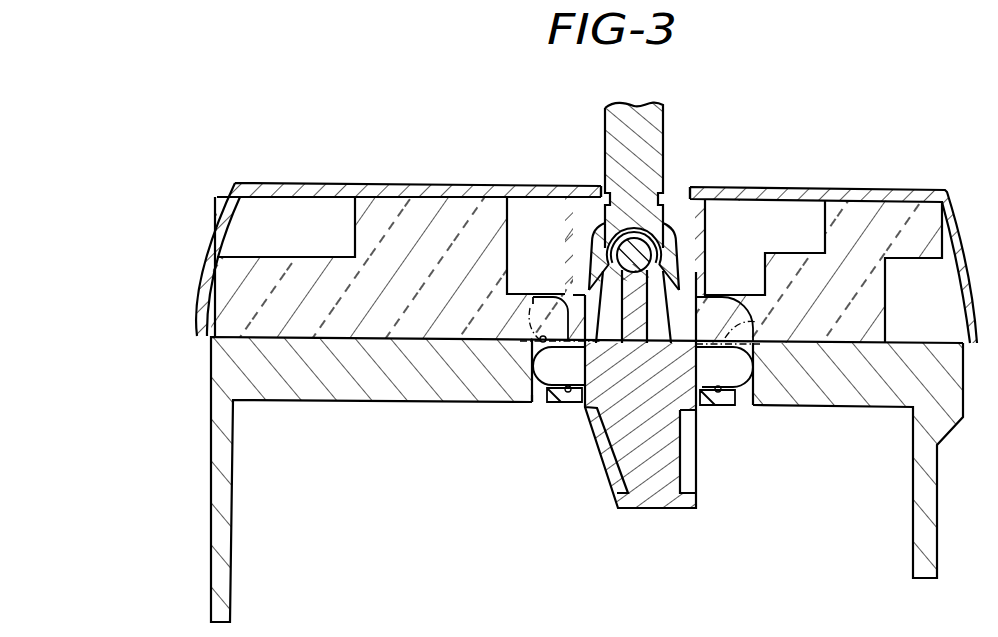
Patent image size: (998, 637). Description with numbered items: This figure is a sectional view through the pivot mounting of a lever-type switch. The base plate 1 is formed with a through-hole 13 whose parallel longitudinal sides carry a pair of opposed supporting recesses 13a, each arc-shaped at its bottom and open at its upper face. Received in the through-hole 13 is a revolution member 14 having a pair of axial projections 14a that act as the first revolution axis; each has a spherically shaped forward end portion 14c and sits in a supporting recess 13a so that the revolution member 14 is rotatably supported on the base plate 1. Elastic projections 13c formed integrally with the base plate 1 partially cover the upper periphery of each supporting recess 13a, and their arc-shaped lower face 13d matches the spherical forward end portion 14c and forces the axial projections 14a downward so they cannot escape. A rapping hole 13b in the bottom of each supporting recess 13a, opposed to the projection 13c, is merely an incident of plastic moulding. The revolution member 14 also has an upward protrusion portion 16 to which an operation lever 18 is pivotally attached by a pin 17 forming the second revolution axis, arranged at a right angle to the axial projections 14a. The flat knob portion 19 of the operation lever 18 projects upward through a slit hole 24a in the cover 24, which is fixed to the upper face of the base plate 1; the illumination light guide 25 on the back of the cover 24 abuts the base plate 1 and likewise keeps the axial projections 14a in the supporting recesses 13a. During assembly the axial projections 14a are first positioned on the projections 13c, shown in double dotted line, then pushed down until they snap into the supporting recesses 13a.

The base plate 1 is at (211, 390).
The through-hole 13 is at (752, 400).
The supporting recesses 13a is at (568, 392).
The rapping hole 13b is at (548, 402).
The projections 13c is at (540, 341).
The lower face 13d is at (531, 401).
The revolution member 14 is at (604, 447).
The axial projections 14a is at (536, 301).
The forward end portion 14c is at (533, 338).
The protrusion portion 16 is at (598, 292).
The pin 17 is at (644, 245).
The operation lever 18 is at (592, 197).
The knob portion 19 is at (606, 110).
The cover 24 is at (301, 184).
The slit hole 24a is at (692, 193).
The illumination light guide 25 is at (352, 197).